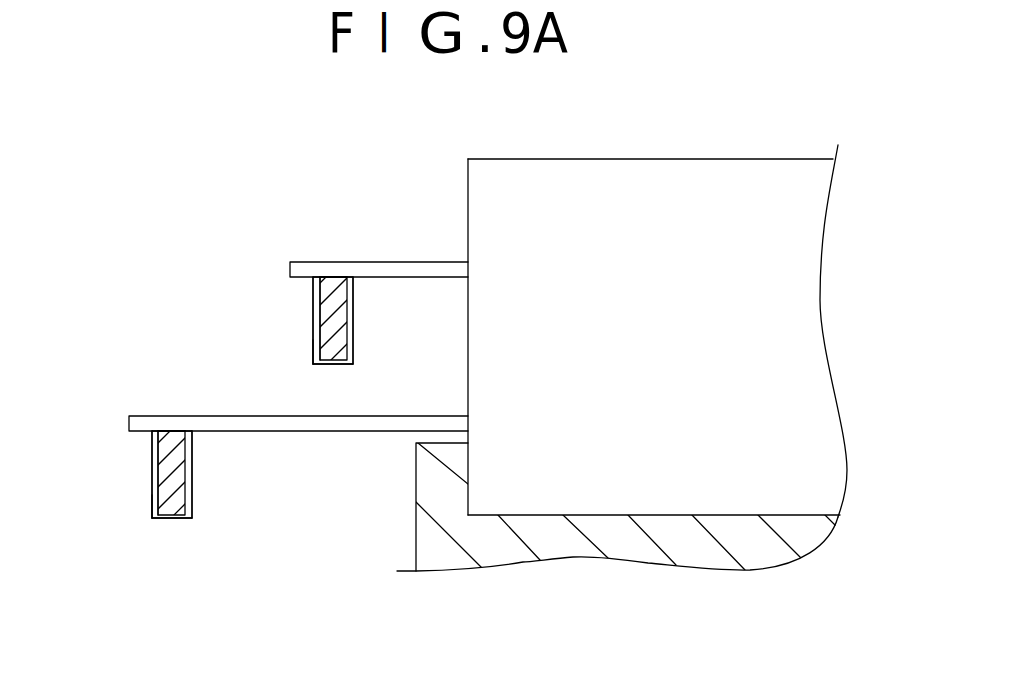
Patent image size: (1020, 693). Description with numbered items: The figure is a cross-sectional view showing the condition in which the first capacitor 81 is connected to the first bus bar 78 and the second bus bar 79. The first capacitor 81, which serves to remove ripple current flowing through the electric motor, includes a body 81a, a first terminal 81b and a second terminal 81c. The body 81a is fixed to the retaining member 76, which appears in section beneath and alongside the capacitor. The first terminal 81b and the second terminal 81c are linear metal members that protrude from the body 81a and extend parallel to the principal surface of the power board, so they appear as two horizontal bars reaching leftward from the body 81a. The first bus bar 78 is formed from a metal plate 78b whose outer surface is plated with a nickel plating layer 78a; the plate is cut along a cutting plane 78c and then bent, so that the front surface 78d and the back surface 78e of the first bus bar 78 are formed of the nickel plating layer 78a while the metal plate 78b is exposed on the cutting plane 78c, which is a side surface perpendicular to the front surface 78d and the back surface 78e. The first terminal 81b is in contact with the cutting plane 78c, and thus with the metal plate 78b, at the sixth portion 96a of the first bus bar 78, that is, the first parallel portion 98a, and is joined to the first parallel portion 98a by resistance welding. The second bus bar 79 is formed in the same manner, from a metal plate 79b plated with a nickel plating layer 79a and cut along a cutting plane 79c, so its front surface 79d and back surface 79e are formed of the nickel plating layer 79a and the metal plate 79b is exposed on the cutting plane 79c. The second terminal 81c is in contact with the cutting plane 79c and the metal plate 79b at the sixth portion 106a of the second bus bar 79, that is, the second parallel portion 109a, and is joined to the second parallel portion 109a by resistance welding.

The first capacitor 81 is at (707, 152).
The body 81a is at (597, 516).
The first terminal 81b is at (390, 263).
The second terminal 81c is at (372, 413).
The retaining member 76 is at (647, 518).
The first bus bar 78 is at (300, 372).
The nickel plating layer 78a is at (313, 300).
The sixth portion 96a is at (320, 327).
The back surface 78e is at (313, 352).
The metal plate 78b is at (333, 365).
The cutting plane 78c is at (340, 277).
The front surface 78d is at (352, 325).
The first parallel portion 98a is at (325, 277).
The second bus bar 79 is at (138, 527).
The nickel plating layer 79a is at (153, 455).
The sixth portion 106a is at (158, 482).
The back surface 79e is at (153, 507).
The metal plate 79b is at (172, 519).
The cutting plane 79c is at (178, 431).
The front surface 79d is at (192, 482).
The second parallel portion 109a is at (165, 430).